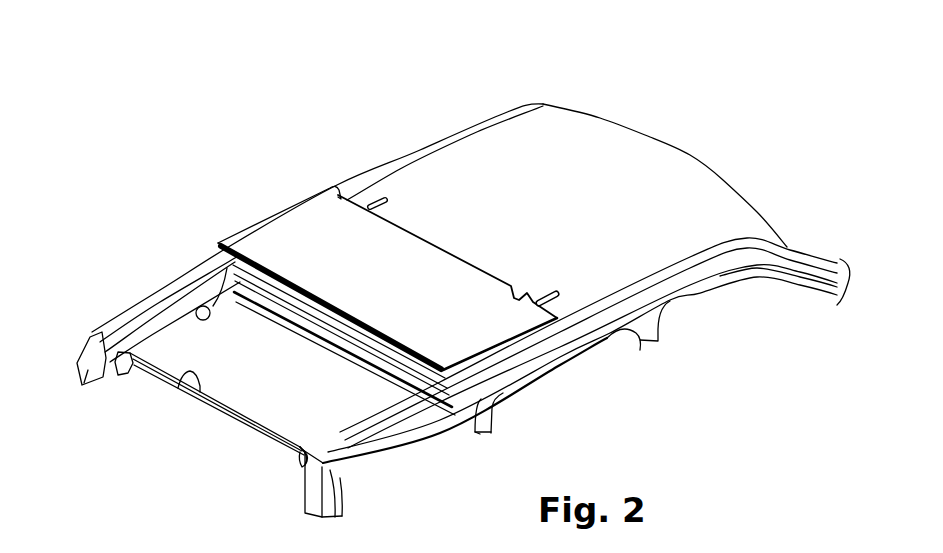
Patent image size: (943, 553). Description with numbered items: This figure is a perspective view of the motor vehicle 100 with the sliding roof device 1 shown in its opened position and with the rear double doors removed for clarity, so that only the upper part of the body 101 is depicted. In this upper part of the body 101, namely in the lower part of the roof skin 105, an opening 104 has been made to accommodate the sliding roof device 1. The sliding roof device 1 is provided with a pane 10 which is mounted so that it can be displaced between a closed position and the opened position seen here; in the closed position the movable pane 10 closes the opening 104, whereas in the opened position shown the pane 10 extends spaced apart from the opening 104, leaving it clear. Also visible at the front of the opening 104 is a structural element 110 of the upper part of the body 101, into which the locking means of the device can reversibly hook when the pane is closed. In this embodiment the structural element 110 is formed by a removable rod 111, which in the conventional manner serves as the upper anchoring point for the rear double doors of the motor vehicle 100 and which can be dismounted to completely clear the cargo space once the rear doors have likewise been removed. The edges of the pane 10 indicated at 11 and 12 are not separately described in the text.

The sliding roof device 1 is at (296, 193).
The pane 10 is at (453, 328).
The rear edge of panel 11 is at (419, 228).
The front edge of panel 12 is at (351, 293).
The motor vehicle 100 is at (136, 262).
The upper part of the body 101 is at (459, 115).
The opening 104 is at (257, 352).
The roof skin 105 is at (605, 197).
The structural element 110 is at (235, 430).
The removable rod 111 is at (178, 382).